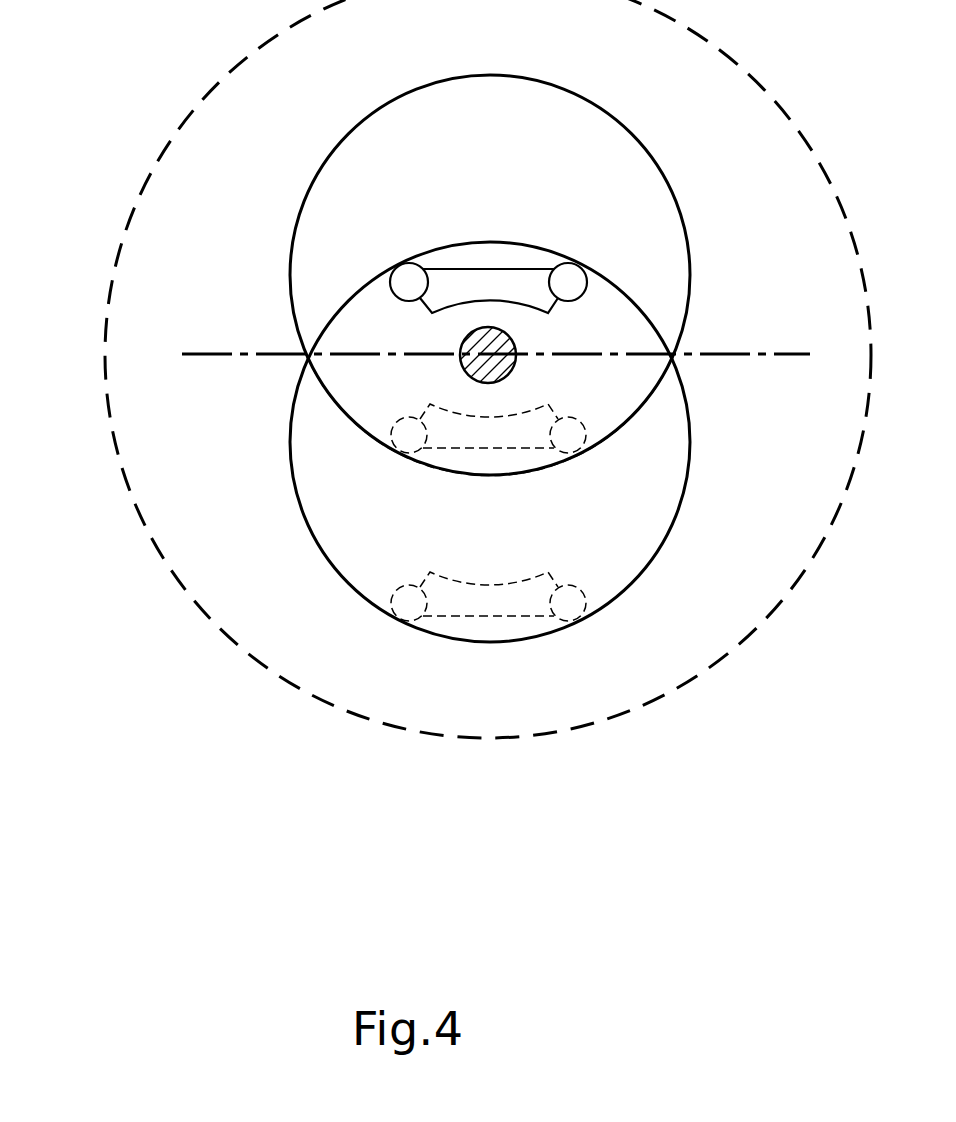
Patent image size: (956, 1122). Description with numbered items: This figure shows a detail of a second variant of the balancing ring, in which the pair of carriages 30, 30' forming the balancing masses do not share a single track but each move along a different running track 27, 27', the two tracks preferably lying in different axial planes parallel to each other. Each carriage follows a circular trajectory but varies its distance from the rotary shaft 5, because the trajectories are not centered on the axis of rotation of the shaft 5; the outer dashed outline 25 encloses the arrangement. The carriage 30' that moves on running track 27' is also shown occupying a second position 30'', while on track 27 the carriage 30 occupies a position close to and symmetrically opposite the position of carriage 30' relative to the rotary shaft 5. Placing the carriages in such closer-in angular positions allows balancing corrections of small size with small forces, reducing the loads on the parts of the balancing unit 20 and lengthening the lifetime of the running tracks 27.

The balancing unit 20 is at (121, 162).
The housing outline 25 is at (748, 78).
The running track 27 is at (512, 275).
The running track 27' is at (531, 442).
The rotary shaft 5 is at (472, 378).
The carriage 30 is at (563, 415).
The carriage 30' is at (488, 244).
The second position 30'' is at (508, 565).